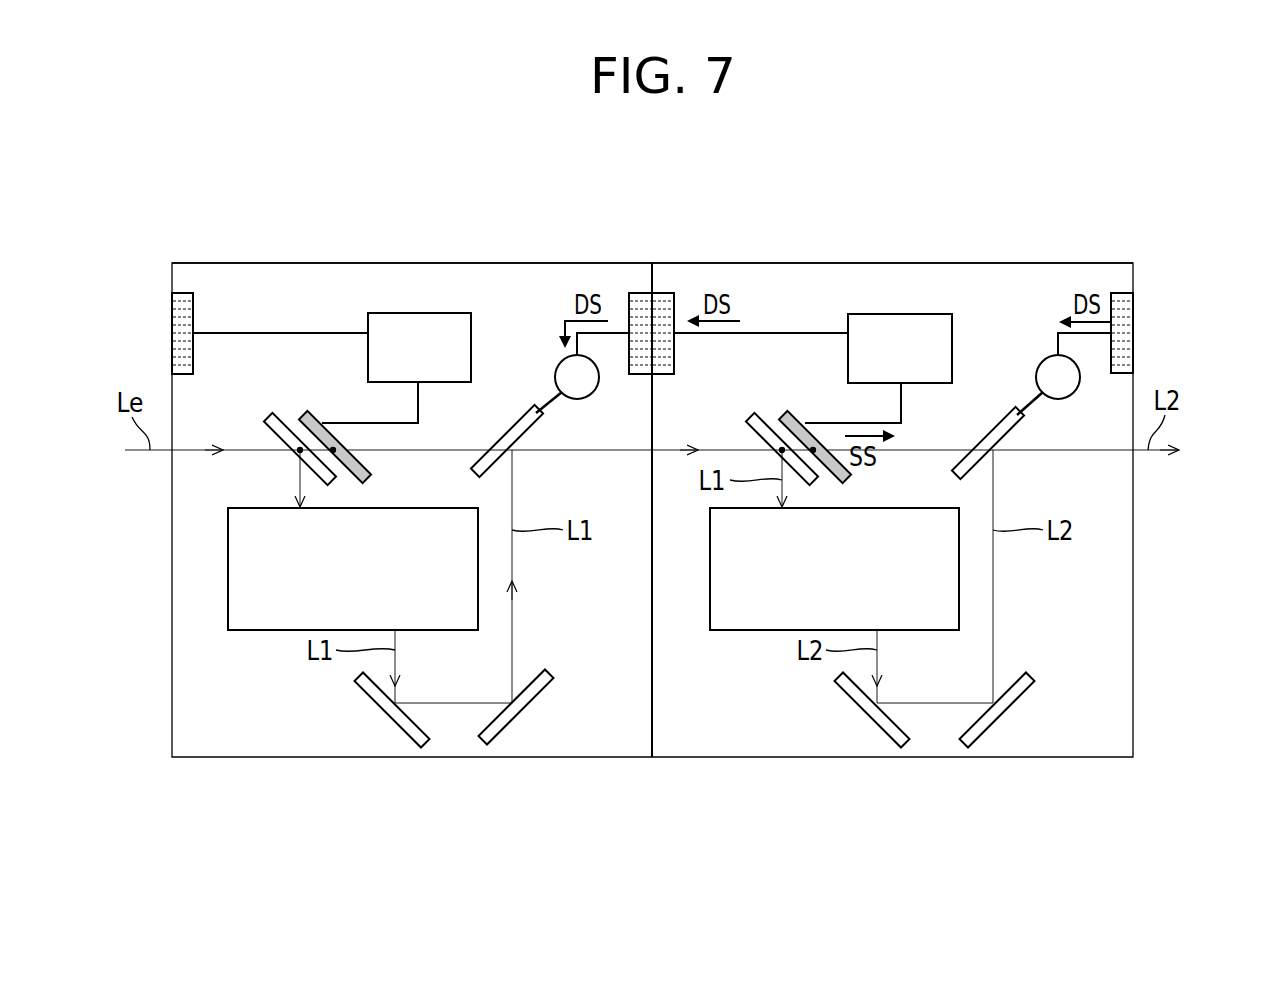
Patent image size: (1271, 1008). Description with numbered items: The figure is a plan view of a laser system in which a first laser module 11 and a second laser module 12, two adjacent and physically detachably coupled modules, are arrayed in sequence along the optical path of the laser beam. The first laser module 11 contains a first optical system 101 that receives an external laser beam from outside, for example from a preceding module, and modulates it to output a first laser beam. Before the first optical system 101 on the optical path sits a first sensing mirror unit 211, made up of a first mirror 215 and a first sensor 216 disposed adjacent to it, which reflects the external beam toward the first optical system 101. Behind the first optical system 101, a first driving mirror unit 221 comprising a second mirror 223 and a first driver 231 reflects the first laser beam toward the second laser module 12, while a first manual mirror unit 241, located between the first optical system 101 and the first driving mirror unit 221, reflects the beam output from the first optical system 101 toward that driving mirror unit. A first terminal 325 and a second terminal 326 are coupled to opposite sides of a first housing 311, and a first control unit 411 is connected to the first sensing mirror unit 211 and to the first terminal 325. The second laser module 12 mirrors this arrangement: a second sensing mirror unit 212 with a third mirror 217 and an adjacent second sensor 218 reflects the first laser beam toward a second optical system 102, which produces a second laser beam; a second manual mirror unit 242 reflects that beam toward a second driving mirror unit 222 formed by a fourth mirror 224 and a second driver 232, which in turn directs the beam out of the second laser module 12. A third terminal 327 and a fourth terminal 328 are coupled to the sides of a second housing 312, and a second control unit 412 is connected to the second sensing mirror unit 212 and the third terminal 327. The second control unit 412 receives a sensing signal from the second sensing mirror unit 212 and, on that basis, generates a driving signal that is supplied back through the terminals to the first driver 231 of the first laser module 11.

The first laser module 11 is at (208, 776).
The second laser module 12 is at (1087, 776).
The first optical system 101 is at (353, 569).
The second optical system 102 is at (834, 569).
The first sensing mirror unit 211 is at (317, 320).
The second sensing mirror unit 212 is at (798, 320).
The first mirror 215 is at (276, 412).
The first sensor 216 is at (312, 412).
The third mirror 217 is at (758, 412).
The second sensor 218 is at (794, 412).
The first driving mirror unit 221 is at (550, 316).
The second driving mirror unit 222 is at (1031, 317).
The second mirror 223 is at (510, 430).
The fourth mirror 224 is at (992, 430).
The first driver 231 is at (562, 385).
The second driver 232 is at (1045, 385).
The first manual mirror unit 241 is at (454, 774).
The second manual mirror unit 242 is at (935, 775).
The first housing 311 is at (430, 263).
The second housing 312 is at (911, 263).
The first terminal 325 is at (180, 316).
The second terminal 326 is at (640, 320).
The third terminal 327 is at (665, 320).
The fourth terminal 328 is at (1124, 316).
The first control unit 411 is at (332, 368).
The second control unit 412 is at (813, 368).